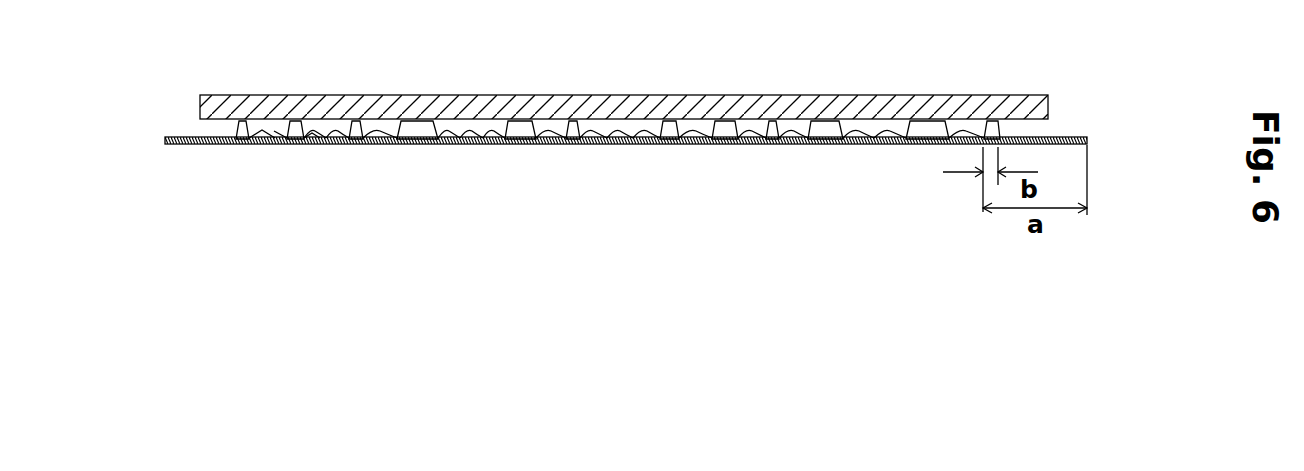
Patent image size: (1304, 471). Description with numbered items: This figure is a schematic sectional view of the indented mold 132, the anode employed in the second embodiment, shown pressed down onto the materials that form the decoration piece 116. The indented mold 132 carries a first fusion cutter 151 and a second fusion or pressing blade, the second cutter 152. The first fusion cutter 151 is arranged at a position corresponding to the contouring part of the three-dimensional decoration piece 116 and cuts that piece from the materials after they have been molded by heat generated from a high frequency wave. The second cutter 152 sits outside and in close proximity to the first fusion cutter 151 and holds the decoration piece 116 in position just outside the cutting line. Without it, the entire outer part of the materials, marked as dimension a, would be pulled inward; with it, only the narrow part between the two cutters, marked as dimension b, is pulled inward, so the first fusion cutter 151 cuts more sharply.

The indented mold 132 is at (290, 96).
The decoration piece 116 is at (195, 138).
The first fusion cutter 151 is at (313, 147).
The second cutter 152 is at (253, 147).